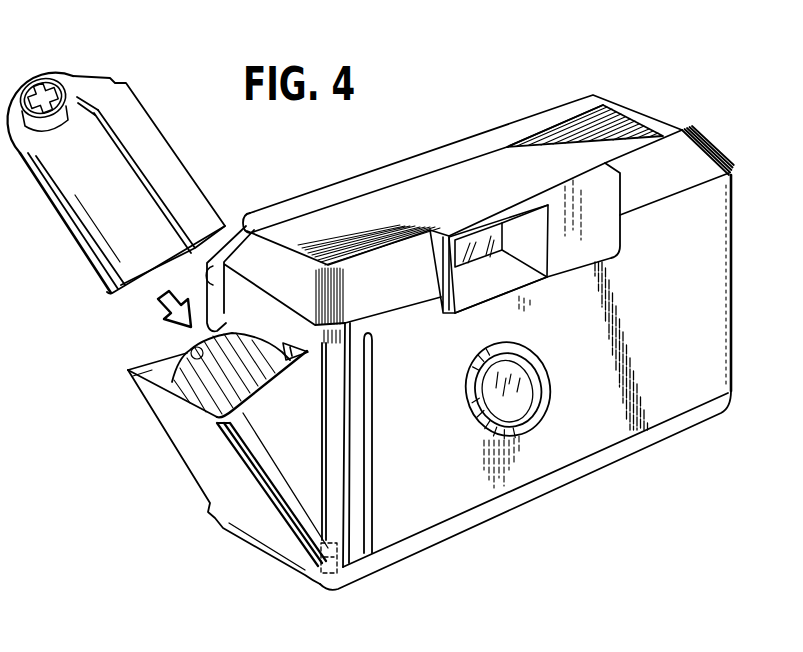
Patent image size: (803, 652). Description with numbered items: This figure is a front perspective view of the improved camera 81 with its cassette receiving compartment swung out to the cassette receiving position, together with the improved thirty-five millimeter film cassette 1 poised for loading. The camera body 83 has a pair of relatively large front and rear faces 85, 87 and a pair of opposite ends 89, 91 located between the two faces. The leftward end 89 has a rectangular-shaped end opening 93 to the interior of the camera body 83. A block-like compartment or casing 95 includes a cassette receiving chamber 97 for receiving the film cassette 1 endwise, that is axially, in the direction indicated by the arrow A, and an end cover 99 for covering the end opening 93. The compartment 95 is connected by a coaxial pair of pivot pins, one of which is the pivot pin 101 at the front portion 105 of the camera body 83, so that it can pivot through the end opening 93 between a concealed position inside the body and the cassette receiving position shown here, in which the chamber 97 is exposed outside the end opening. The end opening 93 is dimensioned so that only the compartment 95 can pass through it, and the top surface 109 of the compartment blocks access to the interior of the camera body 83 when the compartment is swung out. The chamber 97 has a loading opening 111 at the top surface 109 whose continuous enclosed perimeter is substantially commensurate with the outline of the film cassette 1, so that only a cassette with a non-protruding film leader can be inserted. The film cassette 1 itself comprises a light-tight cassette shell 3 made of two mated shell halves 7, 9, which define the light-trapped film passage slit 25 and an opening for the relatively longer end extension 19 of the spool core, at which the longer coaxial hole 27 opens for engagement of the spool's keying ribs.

The film cassette 1 is at (118, 184).
The cassette shell 3 is at (60, 220).
The shell half 7 is at (92, 306).
The shell half 9 is at (92, 80).
The longer end extension 19 is at (66, 78).
The film passage slit 25 is at (170, 134).
The longer coaxial hole 27 is at (38, 80).
The camera 81 is at (469, 139).
The camera body 83 is at (571, 422).
The front face 85 is at (673, 397).
The rear face 87 is at (401, 158).
The opposite end 89 is at (227, 260).
The opposite end 91 is at (731, 242).
The end opening 93 is at (207, 331).
The compartment 95 is at (294, 399).
The cassette receiving chamber 97 is at (258, 372).
The end cover 99 is at (193, 450).
The pivot pin 101 is at (331, 594).
The front portion 105 is at (337, 513).
The top surface 109 is at (256, 326).
The loading opening 111 is at (192, 344).
The arrow A is at (150, 304).